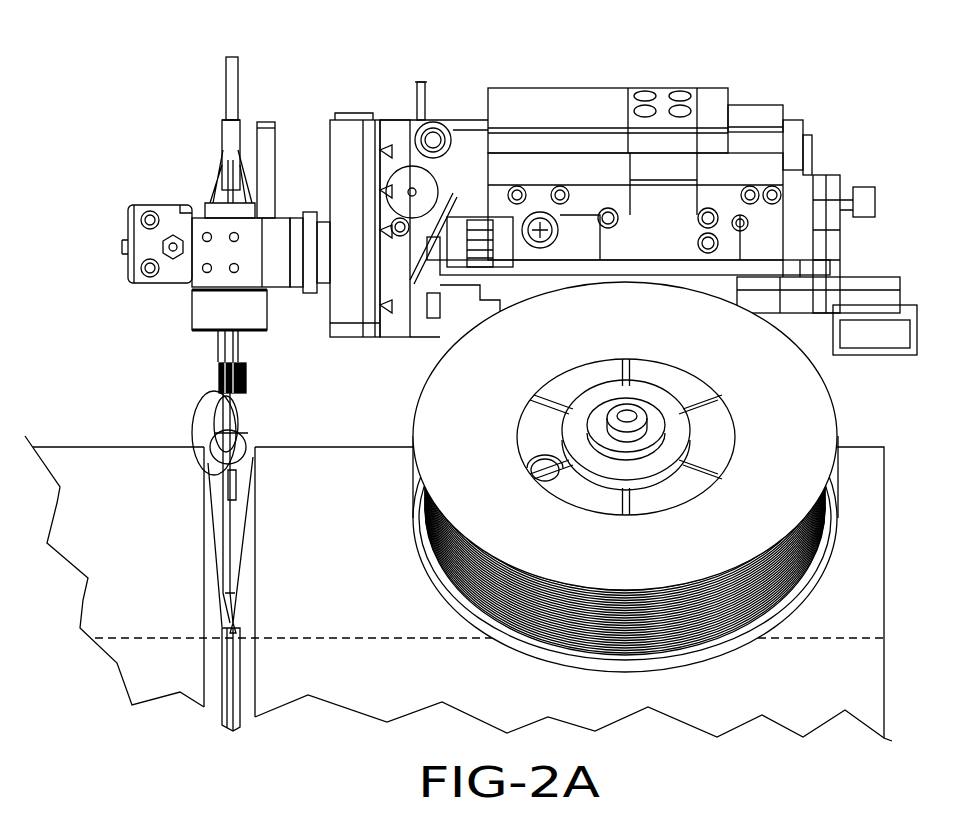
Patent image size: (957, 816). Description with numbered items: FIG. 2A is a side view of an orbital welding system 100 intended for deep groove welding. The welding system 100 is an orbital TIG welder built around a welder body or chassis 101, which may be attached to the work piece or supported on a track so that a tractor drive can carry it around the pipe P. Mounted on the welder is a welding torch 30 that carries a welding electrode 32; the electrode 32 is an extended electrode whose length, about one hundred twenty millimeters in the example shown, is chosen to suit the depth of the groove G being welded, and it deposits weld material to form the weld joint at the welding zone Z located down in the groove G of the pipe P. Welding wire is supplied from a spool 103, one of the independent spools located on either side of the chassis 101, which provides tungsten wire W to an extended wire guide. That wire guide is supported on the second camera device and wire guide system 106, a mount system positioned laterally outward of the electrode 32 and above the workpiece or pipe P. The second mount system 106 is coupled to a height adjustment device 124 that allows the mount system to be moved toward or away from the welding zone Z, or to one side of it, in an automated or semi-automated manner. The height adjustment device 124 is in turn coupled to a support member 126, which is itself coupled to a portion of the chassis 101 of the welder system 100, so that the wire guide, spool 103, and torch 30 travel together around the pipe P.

The welding system 100 is at (100, 95).
The welding torch 30 is at (190, 190).
The chassis 101 is at (348, 153).
The support member 126 is at (283, 212).
The height adjustment device 124 is at (222, 270).
The second camera device and wire guide system 106 is at (193, 417).
The welding electrode 32 is at (230, 558).
The spool 103 is at (670, 477).
The wire W is at (813, 553).
The pipe P is at (81, 524).
The welding zone Z is at (250, 616).
The groove G is at (205, 663).